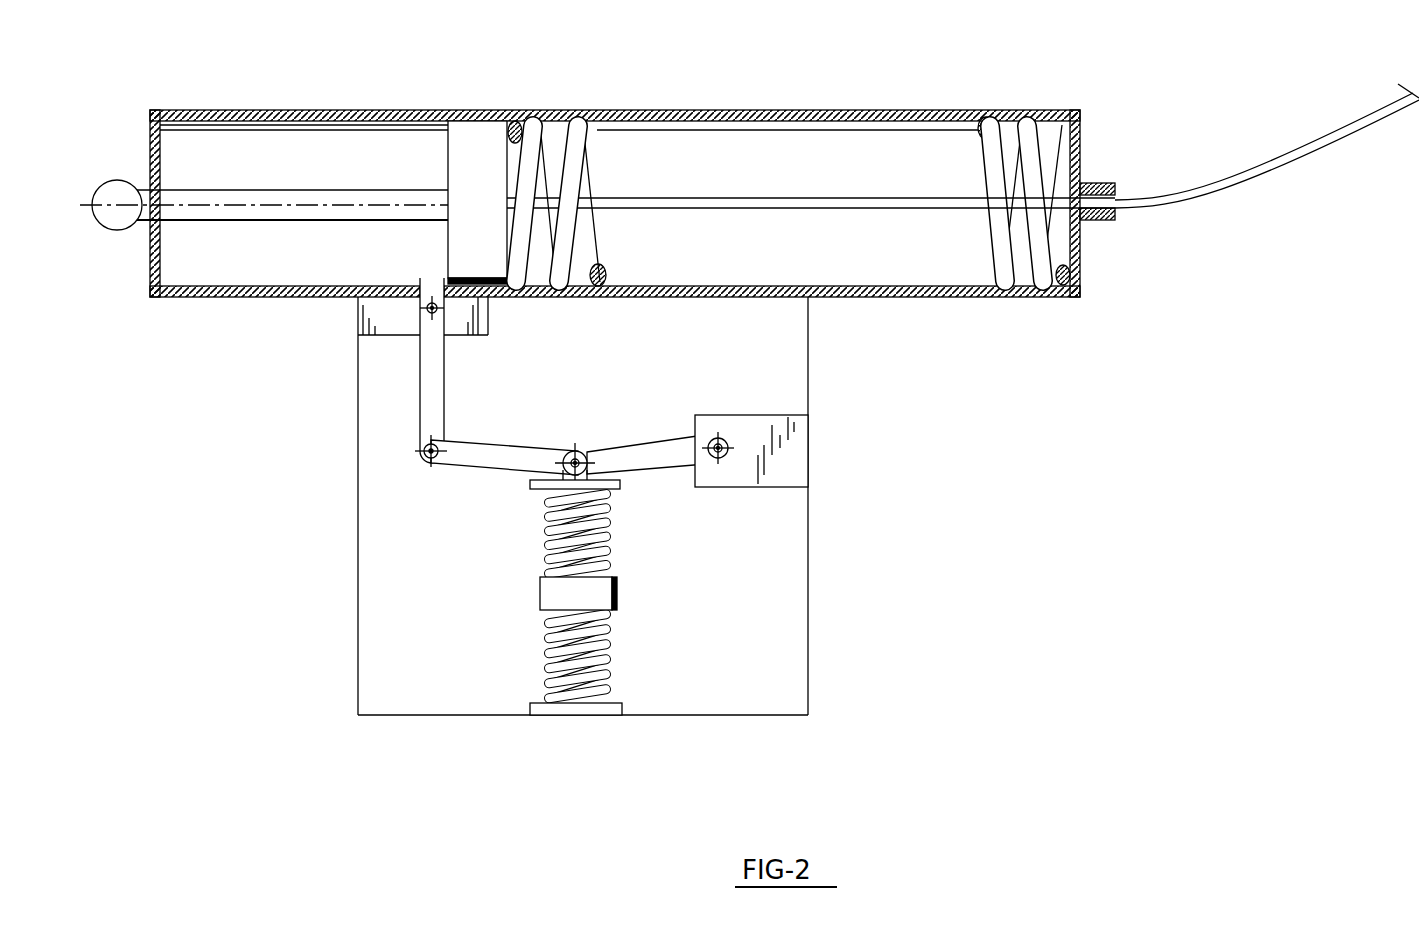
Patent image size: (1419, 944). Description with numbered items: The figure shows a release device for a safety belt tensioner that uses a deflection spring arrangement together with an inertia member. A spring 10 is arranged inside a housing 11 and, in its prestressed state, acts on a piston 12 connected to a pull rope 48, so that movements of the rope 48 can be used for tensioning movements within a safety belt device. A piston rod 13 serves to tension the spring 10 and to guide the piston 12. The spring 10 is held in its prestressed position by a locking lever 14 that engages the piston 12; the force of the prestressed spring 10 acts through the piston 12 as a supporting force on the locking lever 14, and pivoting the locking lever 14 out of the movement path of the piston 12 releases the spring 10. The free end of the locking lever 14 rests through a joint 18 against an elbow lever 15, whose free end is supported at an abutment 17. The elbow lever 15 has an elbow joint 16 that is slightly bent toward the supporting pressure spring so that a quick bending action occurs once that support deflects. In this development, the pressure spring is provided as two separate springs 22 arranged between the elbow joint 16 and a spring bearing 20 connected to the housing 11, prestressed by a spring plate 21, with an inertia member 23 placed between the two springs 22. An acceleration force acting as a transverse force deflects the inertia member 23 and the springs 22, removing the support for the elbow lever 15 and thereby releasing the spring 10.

The spring 10 is at (580, 140).
The housing 11 is at (808, 108).
The piston 12 is at (488, 147).
The piston rod 13 is at (303, 195).
The locking lever 14 is at (430, 357).
The elbow lever 15 is at (512, 458).
The elbow joint 16 is at (578, 466).
The abutment 17 is at (797, 458).
The joint 18 is at (428, 453).
The spring bearing 20 is at (597, 713).
The spring plate 21 is at (547, 485).
The springs 22 is at (602, 545).
The inertia member 23 is at (613, 597).
The pull rope 48 is at (1197, 190).